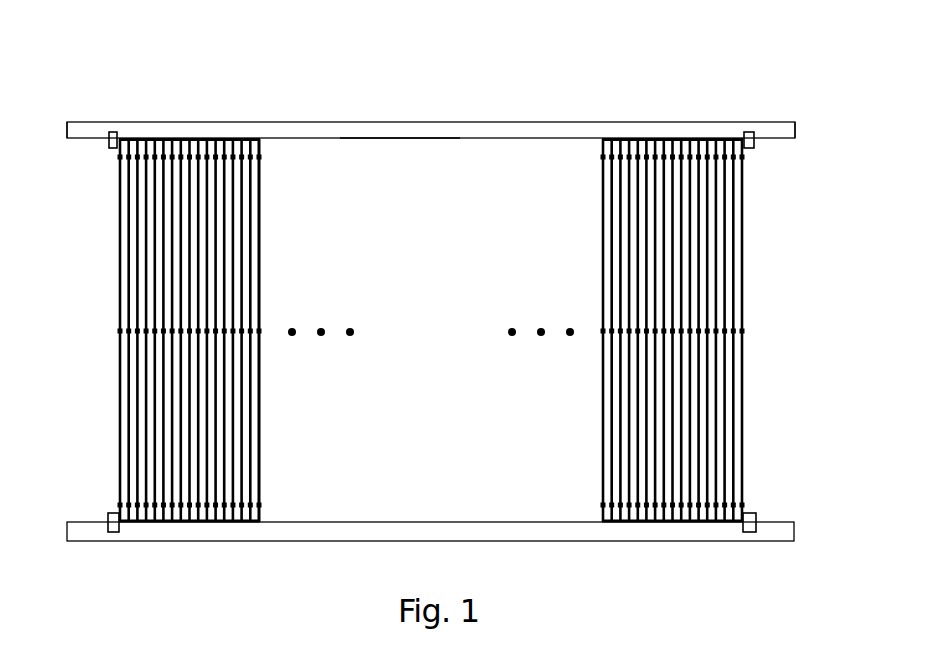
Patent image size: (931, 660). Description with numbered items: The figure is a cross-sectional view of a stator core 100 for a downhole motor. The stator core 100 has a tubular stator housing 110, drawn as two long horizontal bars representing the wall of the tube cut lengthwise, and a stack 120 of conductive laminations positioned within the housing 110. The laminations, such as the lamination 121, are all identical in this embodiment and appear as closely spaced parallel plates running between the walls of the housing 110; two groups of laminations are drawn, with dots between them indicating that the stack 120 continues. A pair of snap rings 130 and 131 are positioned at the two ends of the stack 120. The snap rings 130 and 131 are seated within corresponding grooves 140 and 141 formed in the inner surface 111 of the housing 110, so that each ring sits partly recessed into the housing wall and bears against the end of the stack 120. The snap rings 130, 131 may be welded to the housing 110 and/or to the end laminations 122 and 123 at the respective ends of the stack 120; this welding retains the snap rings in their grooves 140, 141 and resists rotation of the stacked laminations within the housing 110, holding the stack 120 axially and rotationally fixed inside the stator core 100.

The stator core 100 is at (329, 71).
The stator housing 110 is at (465, 121).
The inner surface 111 is at (392, 140).
The stack 120 is at (662, 132).
The conductive lamination 121 is at (260, 207).
The end lamination 122 is at (119, 268).
The end lamination 123 is at (744, 237).
The snap ring 130 is at (114, 131).
The snap ring 131 is at (748, 131).
The groove 140 is at (108, 132).
The groove 141 is at (757, 133).